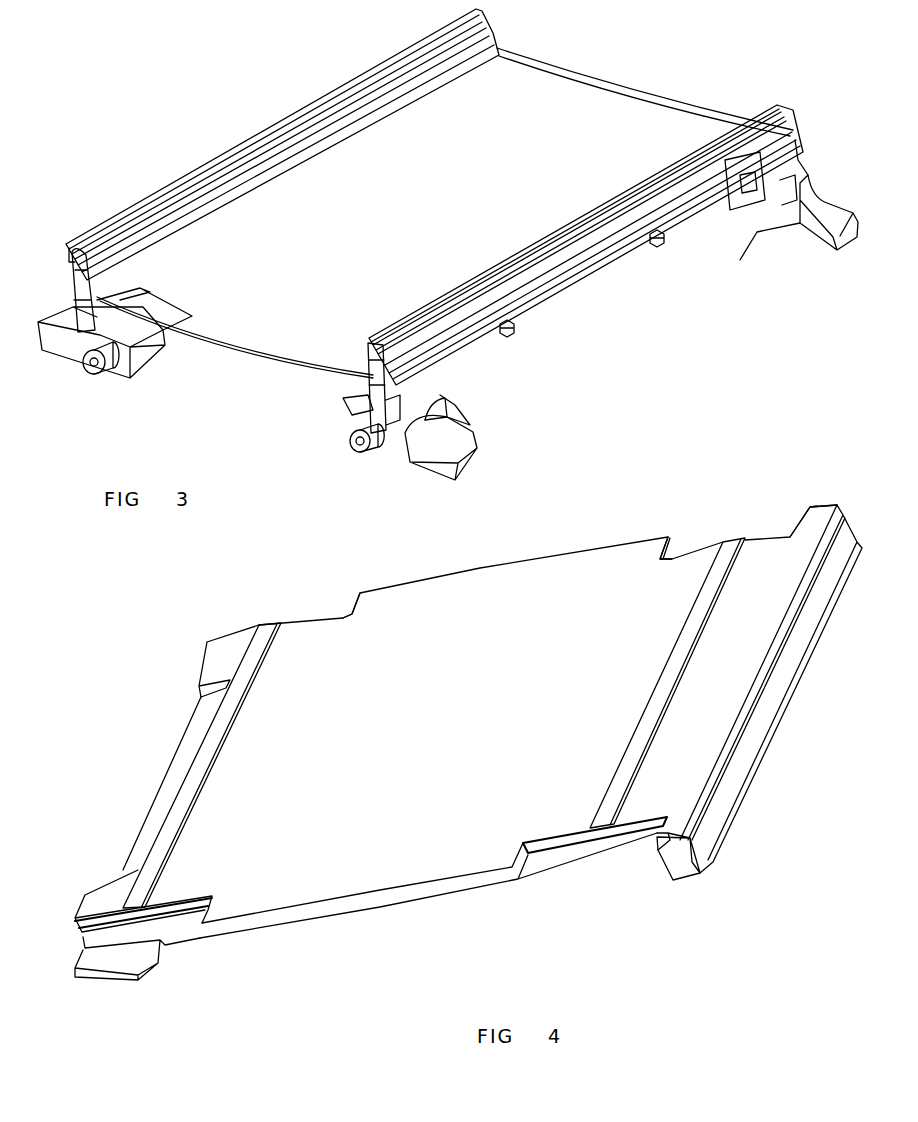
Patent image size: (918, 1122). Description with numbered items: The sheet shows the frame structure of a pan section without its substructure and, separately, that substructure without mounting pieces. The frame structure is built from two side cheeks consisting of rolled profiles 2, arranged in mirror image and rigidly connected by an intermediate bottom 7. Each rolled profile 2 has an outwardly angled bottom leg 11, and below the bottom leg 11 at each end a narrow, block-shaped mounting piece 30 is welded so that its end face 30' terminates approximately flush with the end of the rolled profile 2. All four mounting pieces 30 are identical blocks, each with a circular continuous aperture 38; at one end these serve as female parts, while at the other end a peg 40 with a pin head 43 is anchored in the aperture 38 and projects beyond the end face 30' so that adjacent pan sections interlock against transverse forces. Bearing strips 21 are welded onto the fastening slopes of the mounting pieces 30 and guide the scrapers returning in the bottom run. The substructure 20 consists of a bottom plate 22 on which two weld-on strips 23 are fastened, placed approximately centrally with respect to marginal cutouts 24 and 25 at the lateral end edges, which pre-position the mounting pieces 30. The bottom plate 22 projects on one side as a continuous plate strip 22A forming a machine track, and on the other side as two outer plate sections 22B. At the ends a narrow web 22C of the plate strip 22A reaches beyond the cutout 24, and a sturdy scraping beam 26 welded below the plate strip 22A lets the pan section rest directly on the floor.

In FIG. 3, the rolled profile 2 is at (243, 136).
In FIG. 3, the intermediate bottom 7 is at (265, 330).
In FIG. 3, the bottom leg 11 is at (80, 300).
In FIG. 3, the bearing strip 21 is at (172, 325).
In FIG. 3, the mounting piece 30 is at (445, 337).
In FIG. 3, the end face 30' is at (633, 326).
In FIG. 3, the aperture 38 is at (762, 225).
In FIG. 3, the peg 40 is at (108, 382).
In FIG. 3, the pin head 43 is at (100, 372).
In FIG. 4, the substructure 20 is at (297, 573).
In FIG. 4, the bottom plate 22 is at (588, 580).
In FIG. 4, the continuous plate strip 22A is at (713, 717).
In FIG. 4, the outer plate section 22B is at (215, 660).
In FIG. 4, the narrow web 22C is at (790, 520).
In FIG. 4, the weld-on strip 23 is at (655, 700).
In FIG. 4, the marginal cutout 24 is at (695, 535).
In FIG. 4, the marginal cutout 25 is at (320, 612).
In FIG. 4, the scraping beam 26 is at (688, 870).